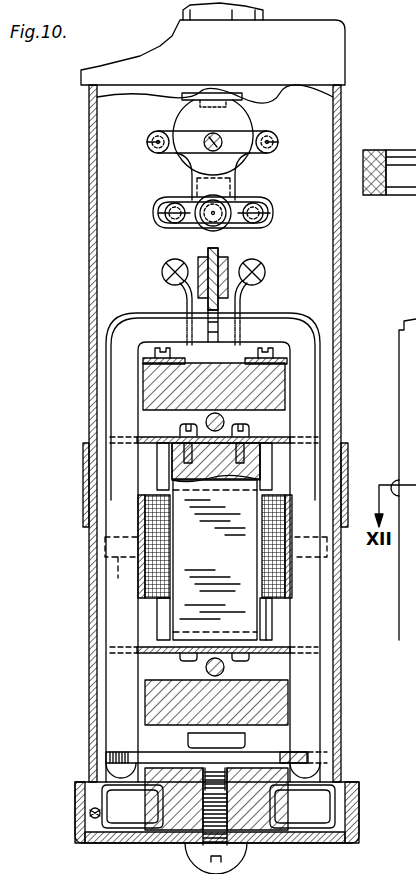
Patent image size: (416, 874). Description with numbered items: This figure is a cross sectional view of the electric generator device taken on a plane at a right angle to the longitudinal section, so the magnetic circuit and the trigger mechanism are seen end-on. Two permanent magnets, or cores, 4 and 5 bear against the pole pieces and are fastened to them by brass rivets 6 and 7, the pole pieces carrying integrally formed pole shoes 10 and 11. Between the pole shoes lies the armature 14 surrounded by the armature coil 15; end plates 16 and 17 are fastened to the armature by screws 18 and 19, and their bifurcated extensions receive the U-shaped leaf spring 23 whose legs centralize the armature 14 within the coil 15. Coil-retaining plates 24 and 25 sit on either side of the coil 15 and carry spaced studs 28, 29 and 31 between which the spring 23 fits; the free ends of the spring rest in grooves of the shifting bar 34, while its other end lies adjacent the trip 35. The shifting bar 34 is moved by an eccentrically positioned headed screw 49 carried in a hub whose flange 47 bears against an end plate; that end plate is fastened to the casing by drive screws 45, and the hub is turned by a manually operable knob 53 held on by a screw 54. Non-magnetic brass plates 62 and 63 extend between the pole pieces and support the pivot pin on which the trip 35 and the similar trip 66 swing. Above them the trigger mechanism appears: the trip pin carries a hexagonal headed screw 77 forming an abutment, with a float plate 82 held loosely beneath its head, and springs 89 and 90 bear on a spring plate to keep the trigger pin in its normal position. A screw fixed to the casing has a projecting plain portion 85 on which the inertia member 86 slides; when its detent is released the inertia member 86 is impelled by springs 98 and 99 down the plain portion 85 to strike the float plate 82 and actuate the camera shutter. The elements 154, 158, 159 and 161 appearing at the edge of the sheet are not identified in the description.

The permanent magnet 4 is at (282, 380).
The permanent magnet 5 is at (290, 705).
The metallic rivet 6 is at (215, 432).
The metallic rivet 7 is at (218, 659).
The pole shoe 10 is at (274, 461).
The pole shoe 11 is at (273, 622).
The armature 14 is at (294, 382).
The armature coil 15 is at (148, 512).
The end plate 16 is at (292, 437).
The end plate 17 is at (290, 652).
The screw 18 is at (240, 424).
The screw 19 is at (240, 661).
The U-shaped leaf spring 23 is at (268, 335).
The coil-retaining plate 24 is at (140, 592).
The coil-retaining plate 25 is at (292, 577).
The stud 28 is at (333, 865).
The stud 29 is at (310, 537).
The stud 31 is at (146, 600).
The shifting bar 34 is at (305, 753).
The trip 35 is at (253, 259).
The drive screw 45 is at (88, 843).
The flange 47 is at (302, 762).
The headed screw 49 is at (246, 740).
The manually operable knob 53 is at (362, 815).
The screw 54 is at (190, 848).
The plate 62 is at (142, 313).
The plate 63 is at (296, 342).
The trip 66 is at (195, 255).
The hexagonal headed screw 77 is at (200, 207).
The float plate 82 is at (240, 190).
The projecting plain portion 85 is at (213, 134).
The inertia member 86 is at (242, 117).
The spring 89 is at (265, 273).
The spring 90 is at (163, 266).
The spring 98 is at (278, 136).
The spring 99 is at (157, 133).
The adjacent member 154 is at (403, 469).
The adjacent member 158 is at (406, 865).
The adjacent member 159 is at (184, 869).
The adjacent member 161 is at (151, 869).